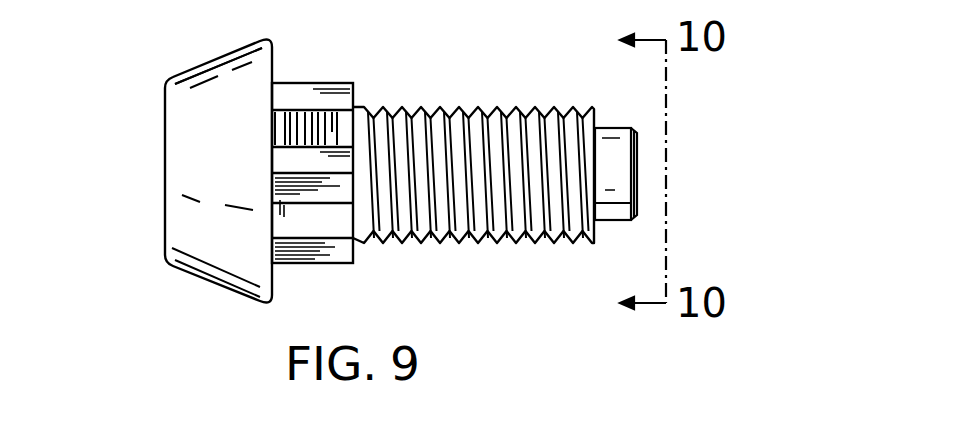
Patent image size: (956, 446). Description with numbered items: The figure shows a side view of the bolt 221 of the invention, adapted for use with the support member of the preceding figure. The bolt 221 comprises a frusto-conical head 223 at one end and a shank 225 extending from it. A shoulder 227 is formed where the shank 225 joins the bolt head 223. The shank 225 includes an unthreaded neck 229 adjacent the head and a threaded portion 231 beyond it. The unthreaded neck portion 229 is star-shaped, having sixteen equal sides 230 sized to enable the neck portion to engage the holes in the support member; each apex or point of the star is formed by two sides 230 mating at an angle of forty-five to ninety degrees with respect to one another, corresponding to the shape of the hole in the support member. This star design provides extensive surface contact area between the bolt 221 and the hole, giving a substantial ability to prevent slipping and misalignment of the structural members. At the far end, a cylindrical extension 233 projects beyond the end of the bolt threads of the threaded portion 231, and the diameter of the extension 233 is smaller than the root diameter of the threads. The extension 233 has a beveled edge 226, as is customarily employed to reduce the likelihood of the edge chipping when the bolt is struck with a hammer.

The bolt 221 is at (164, 147).
The frusto-conical head 223 is at (190, 215).
The shank 225 is at (527, 108).
The beveled edge 226 is at (636, 129).
The shoulder 227 is at (272, 60).
The unthreaded neck 229 is at (328, 83).
The equal sides 230 is at (312, 192).
The threaded portion 231 is at (478, 241).
The cylindrical extension 233 is at (620, 163).